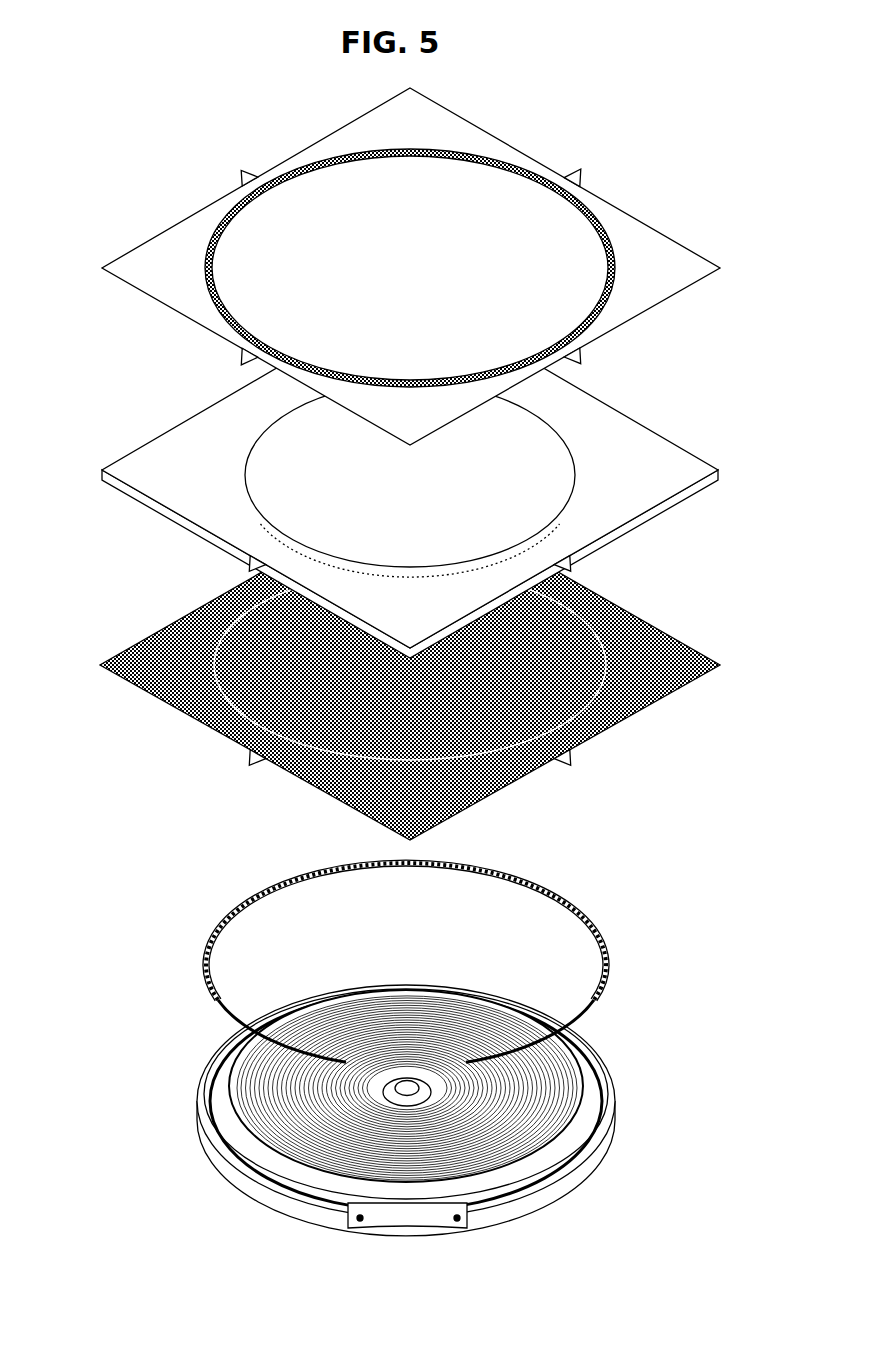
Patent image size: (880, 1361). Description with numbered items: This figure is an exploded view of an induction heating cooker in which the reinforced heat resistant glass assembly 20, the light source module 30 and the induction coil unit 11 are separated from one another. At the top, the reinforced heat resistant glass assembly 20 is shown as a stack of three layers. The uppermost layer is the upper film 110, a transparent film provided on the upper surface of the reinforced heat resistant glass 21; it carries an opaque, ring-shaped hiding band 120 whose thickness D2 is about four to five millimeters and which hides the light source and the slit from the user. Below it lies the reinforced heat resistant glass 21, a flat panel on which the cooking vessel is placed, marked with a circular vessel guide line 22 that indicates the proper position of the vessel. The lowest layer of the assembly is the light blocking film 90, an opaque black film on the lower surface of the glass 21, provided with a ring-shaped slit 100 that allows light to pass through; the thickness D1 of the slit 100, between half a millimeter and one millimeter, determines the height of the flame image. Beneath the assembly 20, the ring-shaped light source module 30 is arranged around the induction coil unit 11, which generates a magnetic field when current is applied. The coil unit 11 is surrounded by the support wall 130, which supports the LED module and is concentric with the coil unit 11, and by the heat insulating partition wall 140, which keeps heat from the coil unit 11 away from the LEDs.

The reinforced heat resistant glass assembly 20 is at (378, 266).
The upper film 110 is at (477, 145).
The hiding band 120 is at (527, 166).
The thickness of the hiding band D2 is at (557, 312).
The reinforced heat resistant glass 21 is at (640, 525).
The vessel guide line 22 is at (618, 455).
The slit 100 is at (620, 650).
The light blocking film 90 is at (658, 697).
The thickness of the slit D1 is at (562, 710).
The light source module 30 is at (230, 913).
The induction coil unit 11 is at (400, 1012).
The support wall 130 is at (217, 1145).
The heat insulating partition wall 140 is at (282, 1162).